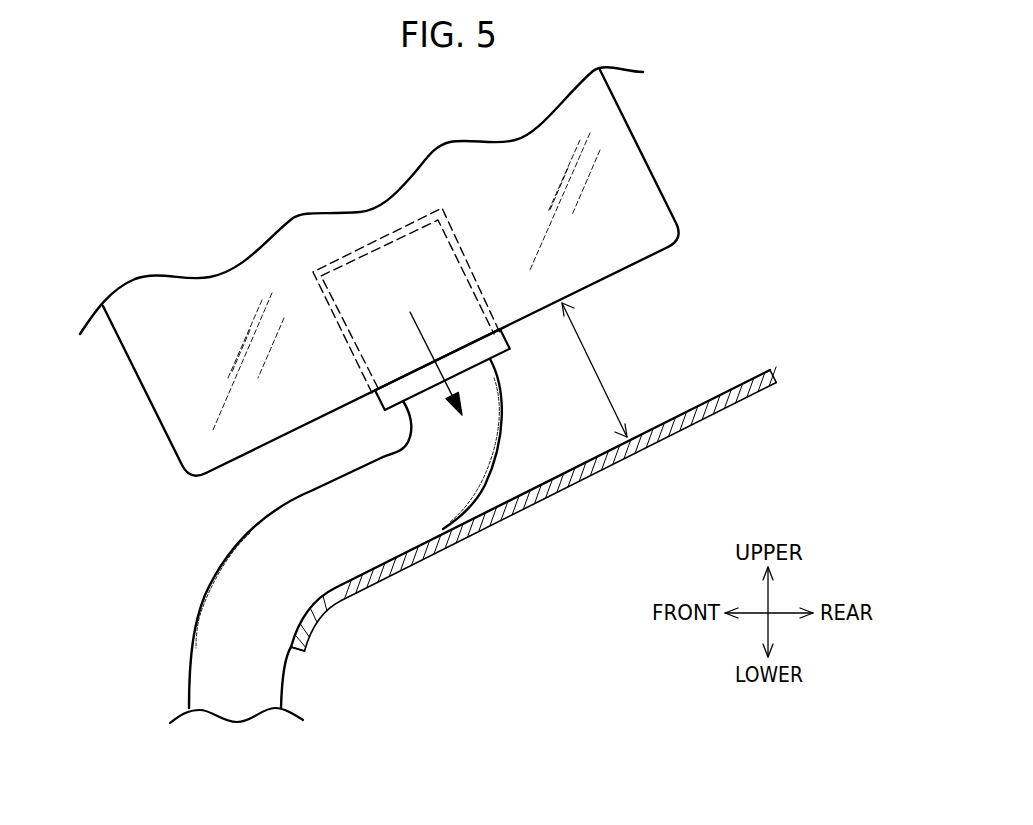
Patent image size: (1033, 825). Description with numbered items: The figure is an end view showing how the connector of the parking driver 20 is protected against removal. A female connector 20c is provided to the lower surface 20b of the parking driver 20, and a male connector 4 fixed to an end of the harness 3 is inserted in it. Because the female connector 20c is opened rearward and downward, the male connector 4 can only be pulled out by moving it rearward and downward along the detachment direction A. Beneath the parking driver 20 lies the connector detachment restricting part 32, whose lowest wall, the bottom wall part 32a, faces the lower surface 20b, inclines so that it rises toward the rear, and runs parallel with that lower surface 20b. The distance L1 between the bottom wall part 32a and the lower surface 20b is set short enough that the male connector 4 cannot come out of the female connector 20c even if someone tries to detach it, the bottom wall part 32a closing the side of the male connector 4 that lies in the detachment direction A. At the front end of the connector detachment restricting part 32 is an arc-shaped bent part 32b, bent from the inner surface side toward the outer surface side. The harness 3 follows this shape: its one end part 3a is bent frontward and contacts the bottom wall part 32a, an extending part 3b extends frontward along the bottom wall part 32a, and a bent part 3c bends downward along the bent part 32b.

The parking driver 20 is at (657, 148).
The lower surface of the parking driver 20b is at (605, 278).
The female connector 20c is at (373, 272).
The male connector 4 is at (492, 352).
The harness 3 is at (313, 541).
The one end part of the harness 3a is at (457, 458).
The extending part 3b is at (343, 512).
The bent part of the harness 3c is at (240, 615).
The connector detachment restricting part 32 is at (533, 509).
The bottom wall part 32a is at (612, 465).
The bent part of the connector detachment restricting part 32b is at (303, 630).
The detachment direction A is at (409, 307).
The distance between the bottom wall part and the lower surface L1 is at (596, 370).